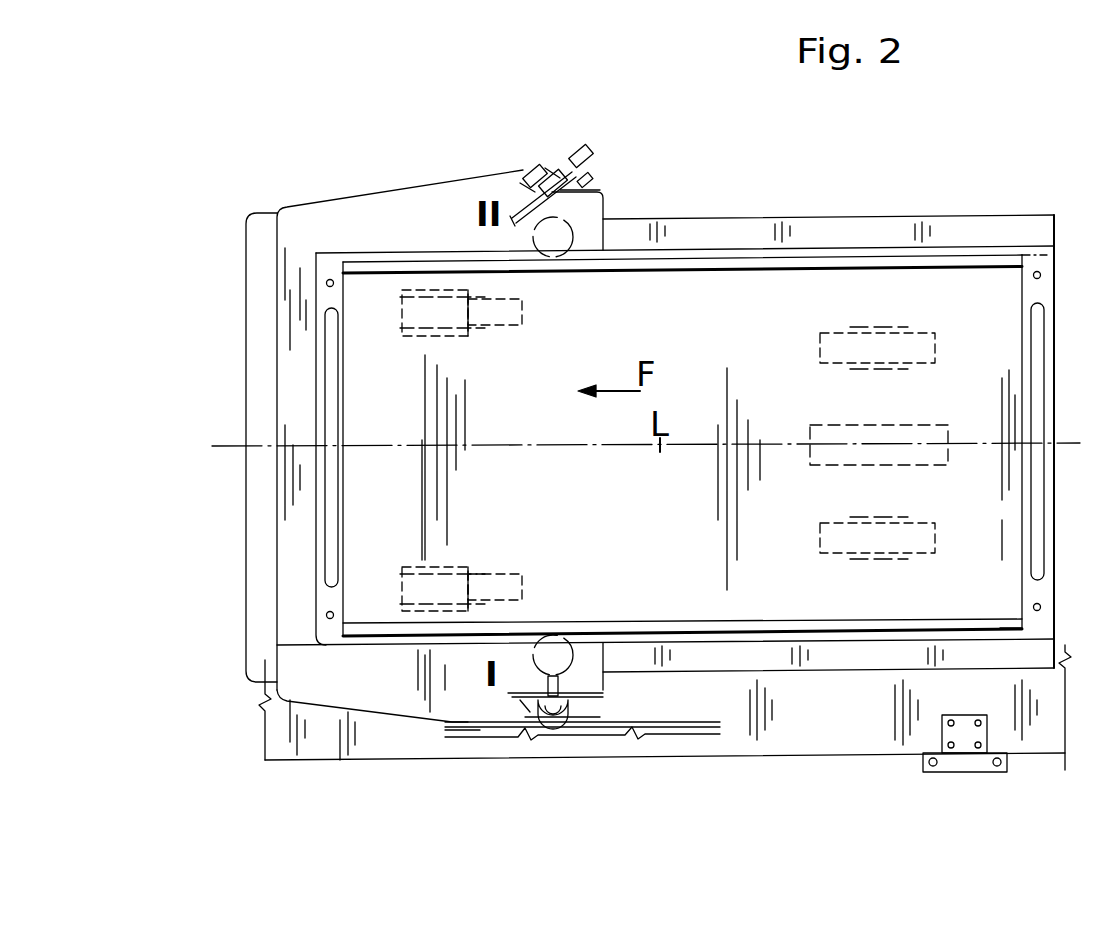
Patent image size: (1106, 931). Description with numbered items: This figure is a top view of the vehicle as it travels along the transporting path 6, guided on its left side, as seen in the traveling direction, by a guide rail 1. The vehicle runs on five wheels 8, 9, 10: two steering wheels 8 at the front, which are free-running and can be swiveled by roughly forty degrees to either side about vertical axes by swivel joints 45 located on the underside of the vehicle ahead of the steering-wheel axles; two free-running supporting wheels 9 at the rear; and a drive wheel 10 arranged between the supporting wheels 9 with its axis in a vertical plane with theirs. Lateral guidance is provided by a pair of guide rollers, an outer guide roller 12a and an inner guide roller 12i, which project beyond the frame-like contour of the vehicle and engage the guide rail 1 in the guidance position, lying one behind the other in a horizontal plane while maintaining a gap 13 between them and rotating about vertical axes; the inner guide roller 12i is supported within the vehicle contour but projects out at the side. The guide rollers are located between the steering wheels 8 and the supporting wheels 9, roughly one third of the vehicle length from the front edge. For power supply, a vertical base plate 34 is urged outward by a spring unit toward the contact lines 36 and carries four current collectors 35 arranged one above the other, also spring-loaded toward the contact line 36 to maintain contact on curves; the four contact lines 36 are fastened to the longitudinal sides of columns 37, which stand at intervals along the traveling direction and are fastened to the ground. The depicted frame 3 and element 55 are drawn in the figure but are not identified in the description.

The guide rail 1 is at (502, 745).
The loading platform frame 3 is at (807, 297).
The transporting path 6 is at (206, 455).
The steering wheels 8 is at (422, 320).
The supporting wheels 9 is at (920, 350).
The drive wheel 10 is at (928, 434).
The outer guide roller 12a is at (582, 190).
The inner guide roller 12i is at (560, 227).
The gap 13 is at (520, 693).
The base plate 34 is at (588, 178).
The current collectors 35 is at (535, 175).
The contact lines 36 is at (755, 663).
The columns 37 is at (962, 737).
The swivel joints 45 is at (437, 308).
The actuating rod 55 is at (553, 200).